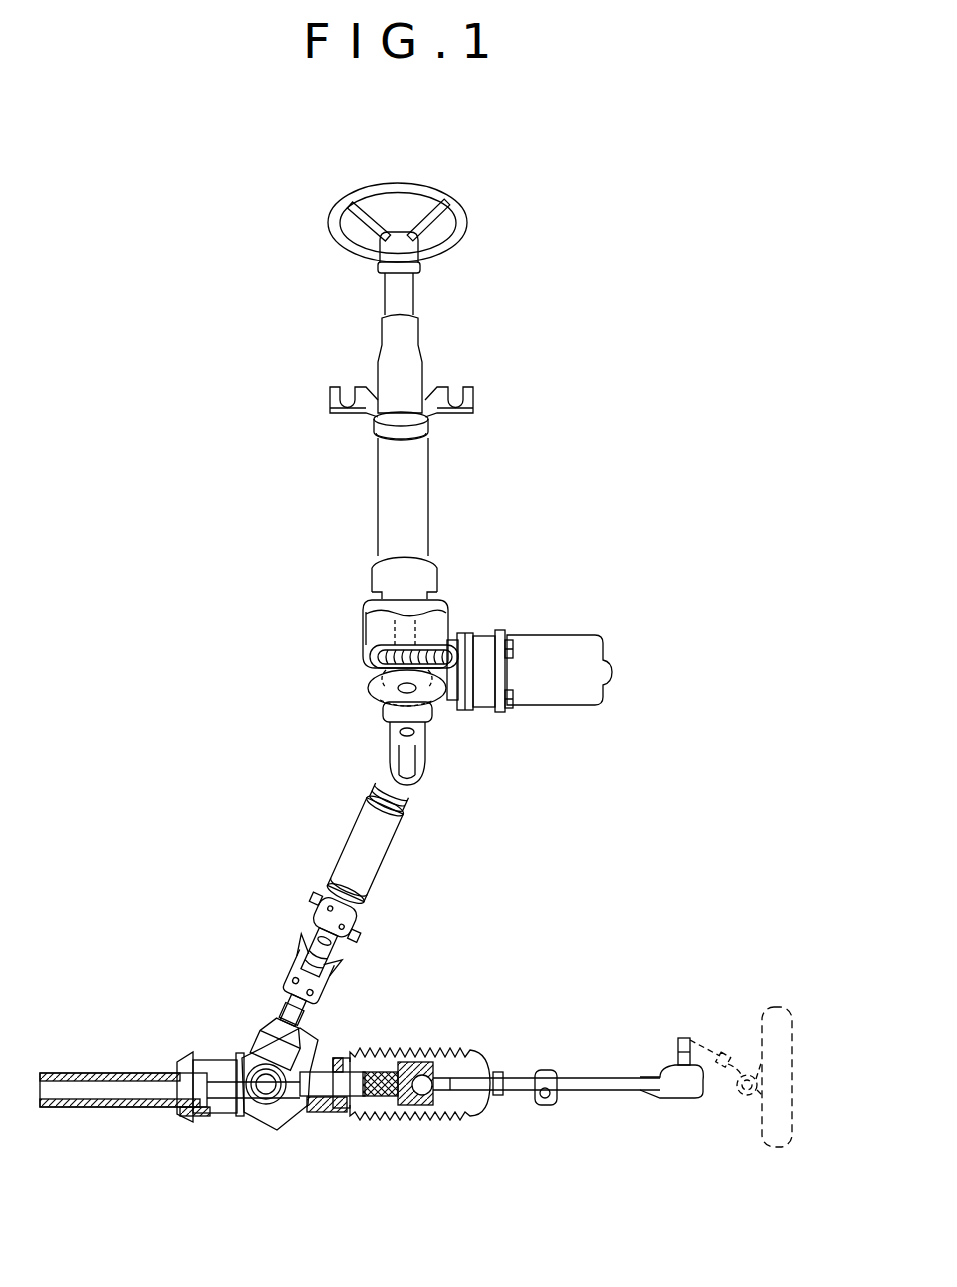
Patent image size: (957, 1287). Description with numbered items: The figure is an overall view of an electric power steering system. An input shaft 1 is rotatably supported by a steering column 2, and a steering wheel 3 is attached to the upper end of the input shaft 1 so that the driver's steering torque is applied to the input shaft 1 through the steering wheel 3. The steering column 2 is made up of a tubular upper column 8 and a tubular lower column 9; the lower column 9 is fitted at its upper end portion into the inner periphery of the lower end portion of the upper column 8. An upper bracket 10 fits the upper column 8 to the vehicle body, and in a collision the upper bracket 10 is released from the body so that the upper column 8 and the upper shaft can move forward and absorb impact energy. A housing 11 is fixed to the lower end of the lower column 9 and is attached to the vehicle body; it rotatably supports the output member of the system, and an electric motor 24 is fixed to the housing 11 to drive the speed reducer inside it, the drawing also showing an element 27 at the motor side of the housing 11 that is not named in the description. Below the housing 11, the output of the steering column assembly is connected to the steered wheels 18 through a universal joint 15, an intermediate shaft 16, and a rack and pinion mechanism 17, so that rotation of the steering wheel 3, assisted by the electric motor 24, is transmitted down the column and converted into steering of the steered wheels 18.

The input shaft 1 is at (418, 293).
The steering column 2 is at (397, 178).
The steering wheel 3 is at (467, 215).
The upper column 8 is at (392, 375).
The lower column 9 is at (395, 509).
The upper bracket 10 is at (474, 398).
The housing 11 is at (378, 628).
The universal joint 15 is at (424, 752).
The intermediate shaft 16 is at (360, 840).
The rack and pinion mechanism 17 is at (298, 1110).
The steered wheels 18 is at (781, 1140).
The electric motor 24 is at (555, 634).
The worm shaft 27 is at (456, 636).